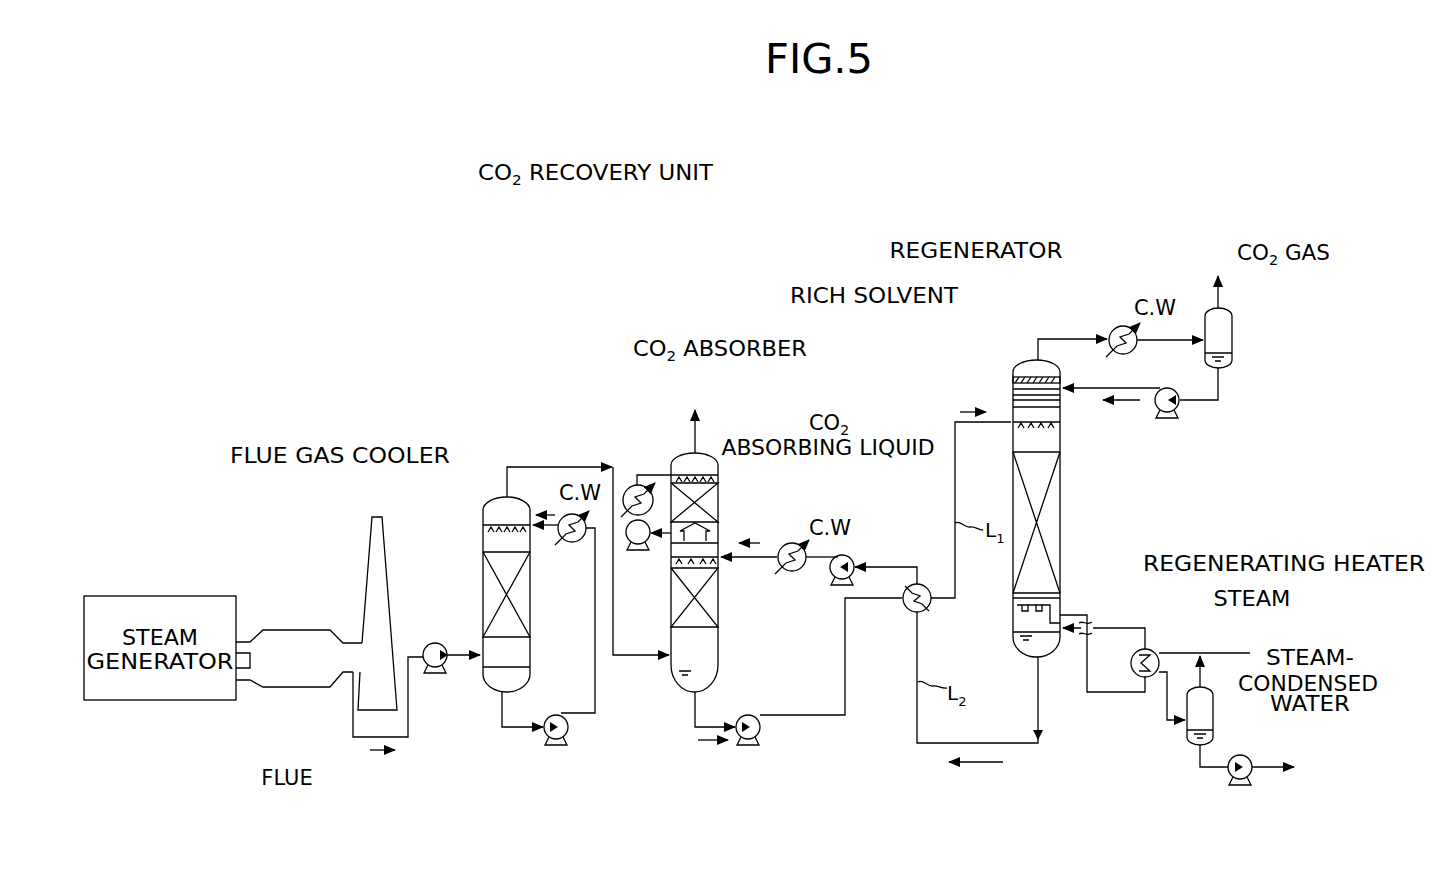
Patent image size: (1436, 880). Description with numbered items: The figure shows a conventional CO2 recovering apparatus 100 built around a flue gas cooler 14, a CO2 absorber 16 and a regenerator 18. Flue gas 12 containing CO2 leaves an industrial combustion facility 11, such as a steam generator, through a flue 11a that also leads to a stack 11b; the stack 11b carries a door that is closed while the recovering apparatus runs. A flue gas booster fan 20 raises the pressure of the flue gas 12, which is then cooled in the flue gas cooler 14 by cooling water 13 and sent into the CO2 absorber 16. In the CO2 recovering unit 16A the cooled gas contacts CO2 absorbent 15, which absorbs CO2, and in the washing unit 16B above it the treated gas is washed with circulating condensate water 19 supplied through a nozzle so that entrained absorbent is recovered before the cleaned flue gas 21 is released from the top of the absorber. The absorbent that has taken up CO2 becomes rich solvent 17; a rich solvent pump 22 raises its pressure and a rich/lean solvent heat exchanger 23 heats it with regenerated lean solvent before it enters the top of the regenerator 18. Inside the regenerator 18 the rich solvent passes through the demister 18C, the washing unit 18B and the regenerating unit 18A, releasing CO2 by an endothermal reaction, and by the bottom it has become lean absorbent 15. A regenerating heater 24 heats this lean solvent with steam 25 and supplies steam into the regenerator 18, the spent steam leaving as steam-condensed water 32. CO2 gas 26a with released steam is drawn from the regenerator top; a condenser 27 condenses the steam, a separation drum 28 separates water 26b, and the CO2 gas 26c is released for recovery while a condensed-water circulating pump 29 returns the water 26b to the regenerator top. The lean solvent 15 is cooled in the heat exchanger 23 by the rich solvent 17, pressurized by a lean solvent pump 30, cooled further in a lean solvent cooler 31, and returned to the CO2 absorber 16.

The CO2 recovering apparatus 100 is at (601, 253).
The industrial combustion facility 11 is at (215, 595).
The flue 11a is at (277, 688).
The stack 11b is at (370, 552).
The flue gas 12 is at (377, 753).
The cooling water 13 is at (551, 514).
The flue gas cooler 14 is at (482, 510).
The CO2 absorbent 15 is at (761, 543).
The CO2 absorber 16 is at (729, 527).
The CO2 recovering unit 16A is at (712, 605).
The washing unit 16B is at (712, 503).
The rich solvent 17 is at (682, 682).
The regenerator 18 is at (1041, 458).
The regenerating unit 18A is at (1057, 528).
The washing unit 18B is at (1057, 405).
The demister 18C is at (1022, 377).
The condensate water 19 is at (647, 475).
The flue gas booster fan 20 is at (437, 643).
The treated flue gas 21 is at (693, 434).
The rich solvent pump 22 is at (743, 715).
The rich/lean solvent heat exchanger 23 is at (912, 615).
The regenerating heater 24 is at (1155, 650).
The steam 25 is at (1222, 652).
The CO2 gas 26a is at (1070, 338).
The water 26b is at (1233, 362).
The CO2 gas 26c is at (1222, 298).
The condenser 27 is at (1123, 326).
The separation drum 28 is at (1237, 343).
The condensed-water circulating pump 29 is at (1180, 402).
The lean solvent pump 30 is at (850, 557).
The lean solvent cooler 31 is at (803, 573).
The steam-condensed water 32 is at (1273, 758).